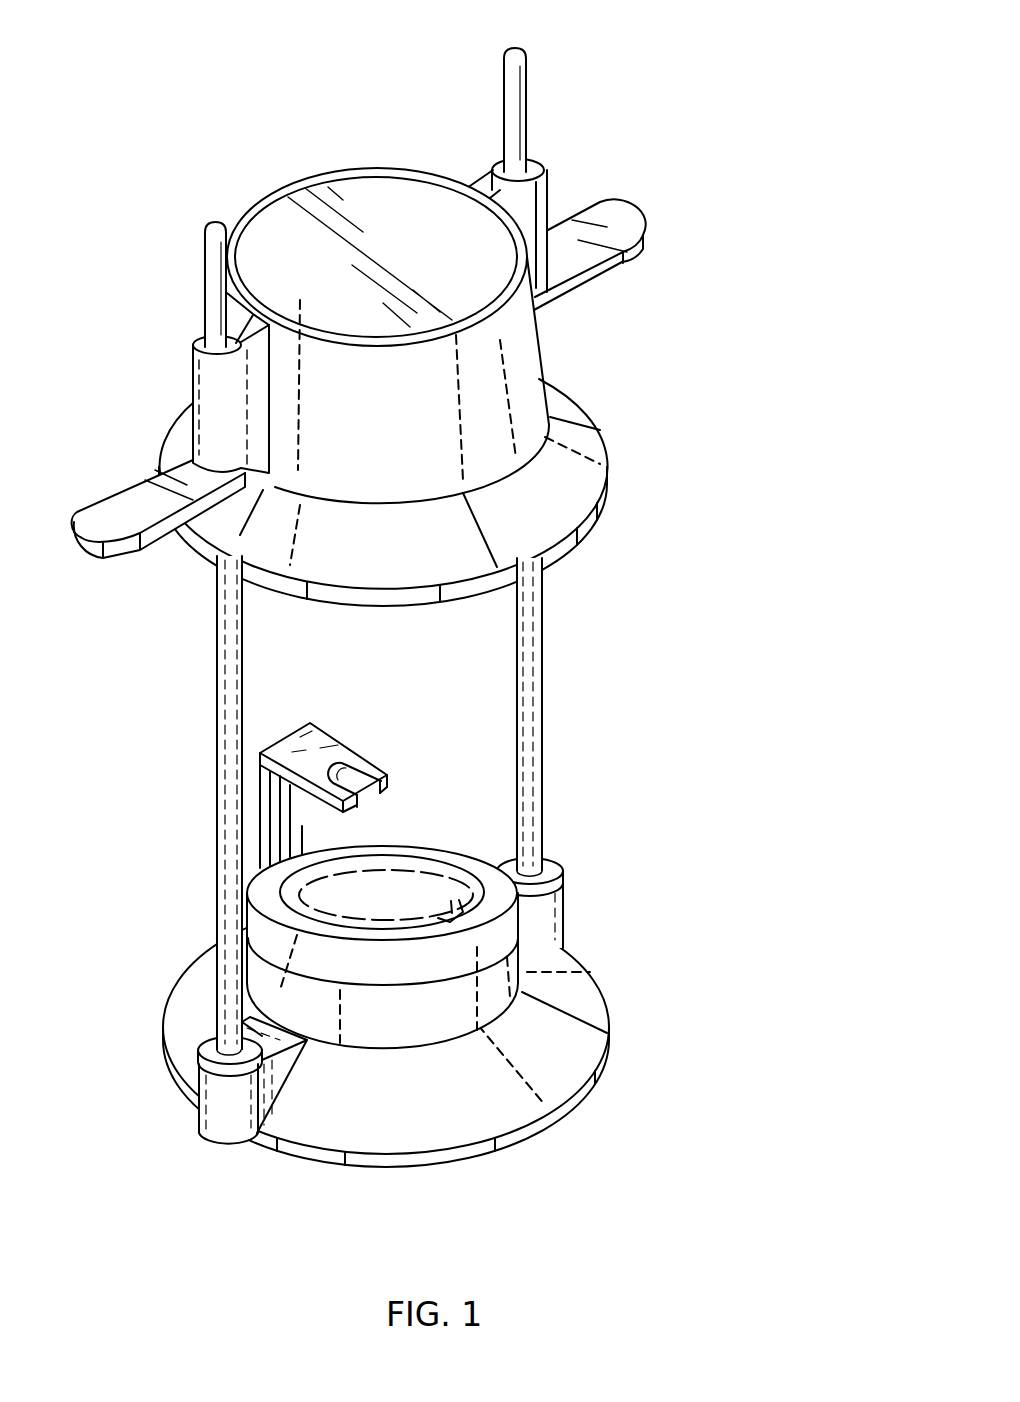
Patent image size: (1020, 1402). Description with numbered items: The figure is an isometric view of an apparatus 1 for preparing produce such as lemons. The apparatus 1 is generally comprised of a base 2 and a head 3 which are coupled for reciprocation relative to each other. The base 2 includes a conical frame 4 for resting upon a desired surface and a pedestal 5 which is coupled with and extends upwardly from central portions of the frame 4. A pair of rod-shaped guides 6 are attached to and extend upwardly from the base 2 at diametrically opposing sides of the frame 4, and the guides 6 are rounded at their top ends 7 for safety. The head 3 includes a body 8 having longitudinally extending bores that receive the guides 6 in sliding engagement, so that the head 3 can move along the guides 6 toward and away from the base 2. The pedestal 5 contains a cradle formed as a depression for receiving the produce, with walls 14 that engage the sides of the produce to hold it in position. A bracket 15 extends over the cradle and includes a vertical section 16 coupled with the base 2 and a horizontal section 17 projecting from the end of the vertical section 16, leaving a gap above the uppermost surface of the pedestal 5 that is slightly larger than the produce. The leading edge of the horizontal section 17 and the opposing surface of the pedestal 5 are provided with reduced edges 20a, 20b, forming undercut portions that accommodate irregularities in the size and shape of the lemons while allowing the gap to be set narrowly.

The apparatus 1 is at (471, 615).
The base 2 is at (652, 992).
The head 3 is at (625, 465).
The frame 4 is at (576, 1070).
The pedestal 5 is at (367, 1008).
The guides 6 is at (537, 620).
The top ends 7 is at (518, 50).
The body 8 is at (523, 352).
The walls 14 is at (380, 886).
The bracket 15 is at (369, 760).
The vertical section 16 is at (300, 838).
The horizontal section 17 is at (445, 723).
The reduced edge 20a is at (345, 812).
The reduced edge 20b is at (443, 905).